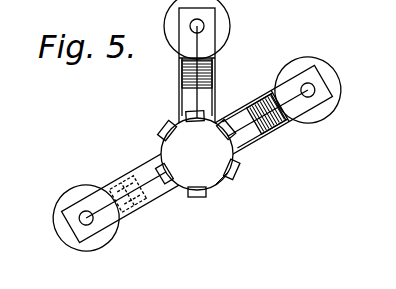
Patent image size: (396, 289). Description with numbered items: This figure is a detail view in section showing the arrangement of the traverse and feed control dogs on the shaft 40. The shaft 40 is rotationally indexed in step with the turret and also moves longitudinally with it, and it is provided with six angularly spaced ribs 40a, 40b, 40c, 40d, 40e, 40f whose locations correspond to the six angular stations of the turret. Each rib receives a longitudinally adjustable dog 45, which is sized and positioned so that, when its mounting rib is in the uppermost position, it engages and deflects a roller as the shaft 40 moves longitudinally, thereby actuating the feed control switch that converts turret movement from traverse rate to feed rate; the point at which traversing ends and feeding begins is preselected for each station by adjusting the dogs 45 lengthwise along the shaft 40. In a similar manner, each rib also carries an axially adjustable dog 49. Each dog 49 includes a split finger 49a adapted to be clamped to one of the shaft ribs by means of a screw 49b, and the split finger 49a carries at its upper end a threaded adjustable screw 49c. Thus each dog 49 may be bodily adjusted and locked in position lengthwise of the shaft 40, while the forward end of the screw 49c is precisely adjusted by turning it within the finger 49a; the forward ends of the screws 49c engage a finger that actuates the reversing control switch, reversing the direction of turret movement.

The shaft 40 is at (208, 164).
The rib 40a is at (208, 116).
The rib 40b is at (238, 147).
The rib 40c is at (163, 186).
The rib 40d is at (198, 198).
The rib 40e is at (233, 181).
The rib 40f is at (168, 127).
The dog 45 is at (215, 63).
The dog 49 is at (216, 25).
The split finger 49a is at (117, 225).
The screw 49b is at (114, 185).
The threaded adjustable screw 49c is at (79, 188).